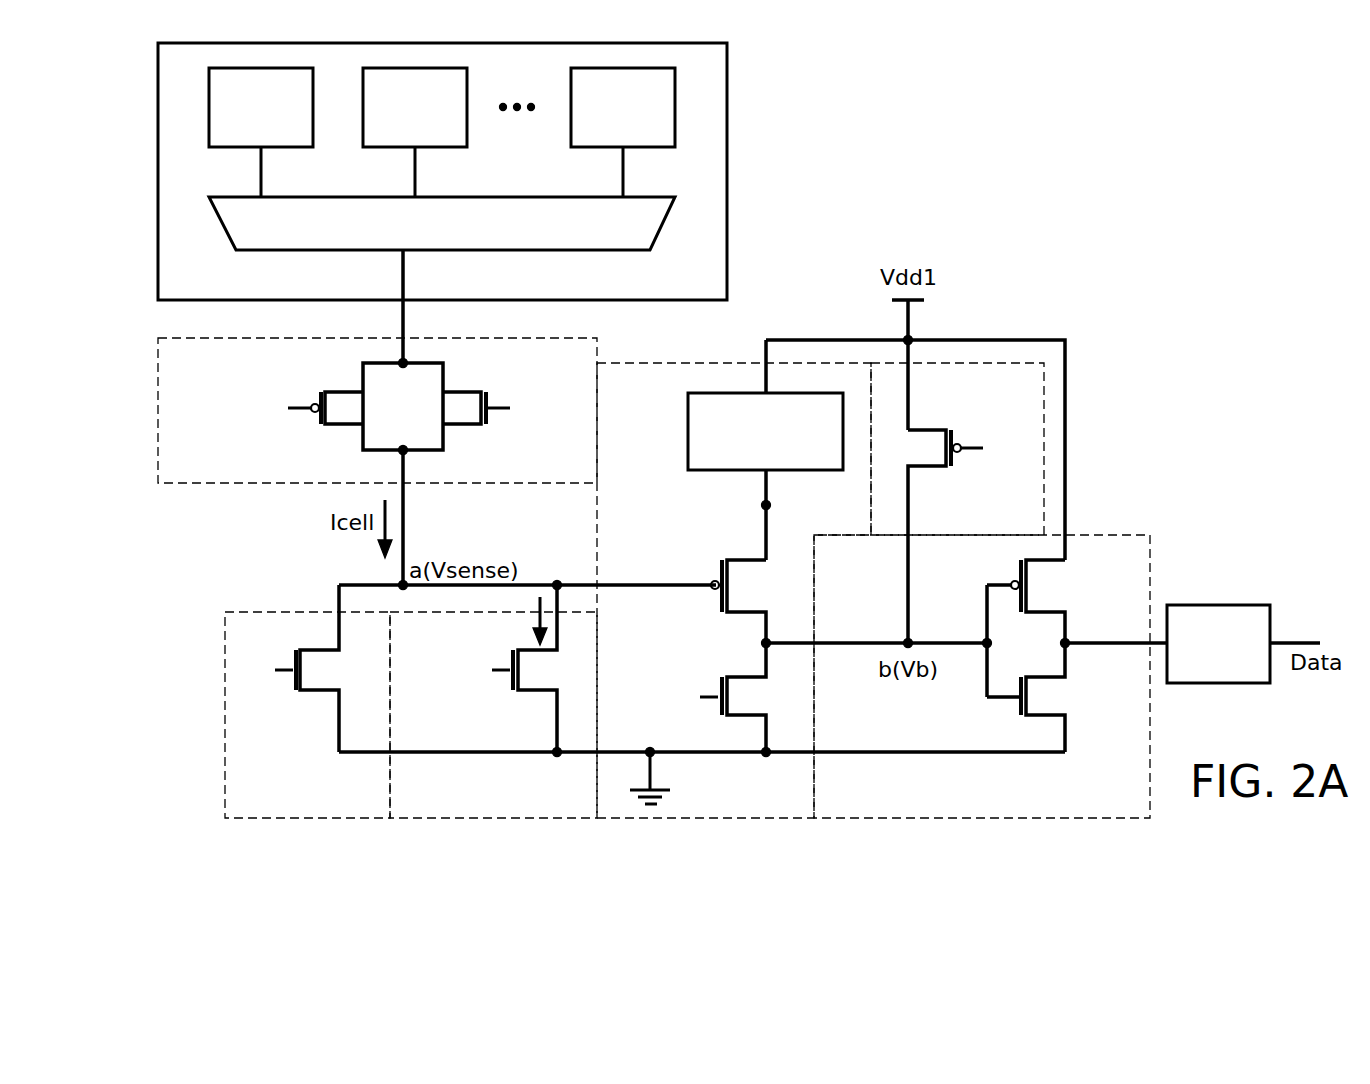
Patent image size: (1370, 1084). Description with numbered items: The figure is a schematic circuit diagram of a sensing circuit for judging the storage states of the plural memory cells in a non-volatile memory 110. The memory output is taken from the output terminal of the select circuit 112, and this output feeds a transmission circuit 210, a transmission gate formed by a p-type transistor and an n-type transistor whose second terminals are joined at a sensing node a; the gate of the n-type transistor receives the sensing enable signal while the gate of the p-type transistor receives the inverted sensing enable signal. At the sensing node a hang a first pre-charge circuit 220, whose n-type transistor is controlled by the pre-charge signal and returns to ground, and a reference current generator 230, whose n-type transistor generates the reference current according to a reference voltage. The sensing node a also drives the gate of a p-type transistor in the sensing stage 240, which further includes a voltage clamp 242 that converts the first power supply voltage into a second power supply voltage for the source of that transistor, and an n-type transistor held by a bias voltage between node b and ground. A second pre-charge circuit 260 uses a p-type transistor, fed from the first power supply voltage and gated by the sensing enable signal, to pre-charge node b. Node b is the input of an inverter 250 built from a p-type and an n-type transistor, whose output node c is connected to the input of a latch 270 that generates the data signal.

The non-volatile memory 110 is at (442, 171).
The select circuit 112 is at (442, 223).
The transmission circuit 210 is at (377, 410).
The first pre-charge circuit 220 is at (307, 701).
The reference current generator 230 is at (493, 701).
The sensing stage 240 is at (734, 590).
The voltage clamp 242 is at (688, 420).
The inverter 250 is at (982, 676).
The second pre-charge circuit 260 is at (957, 503).
The latch 270 is at (1217, 605).